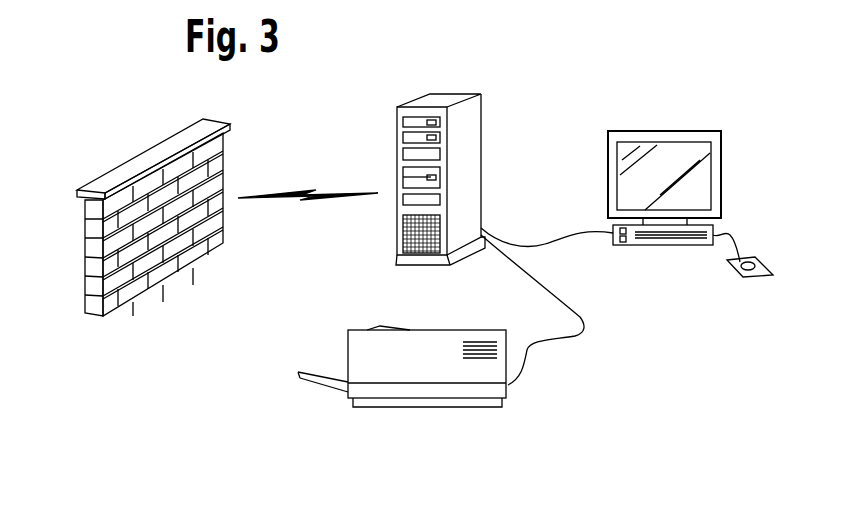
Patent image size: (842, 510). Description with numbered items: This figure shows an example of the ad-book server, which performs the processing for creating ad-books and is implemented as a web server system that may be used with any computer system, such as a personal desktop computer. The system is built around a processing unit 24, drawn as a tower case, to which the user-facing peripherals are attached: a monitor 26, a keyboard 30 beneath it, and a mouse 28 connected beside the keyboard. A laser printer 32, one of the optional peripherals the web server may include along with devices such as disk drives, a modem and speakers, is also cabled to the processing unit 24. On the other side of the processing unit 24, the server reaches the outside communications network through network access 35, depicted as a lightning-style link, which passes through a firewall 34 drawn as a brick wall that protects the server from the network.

The processing unit 24 is at (475, 138).
The monitor 26 is at (702, 182).
The mouse 28 is at (753, 270).
The keyboard 30 is at (630, 245).
The laser printer 32 is at (353, 335).
The firewall 34 is at (130, 168).
The network access 35 is at (337, 192).